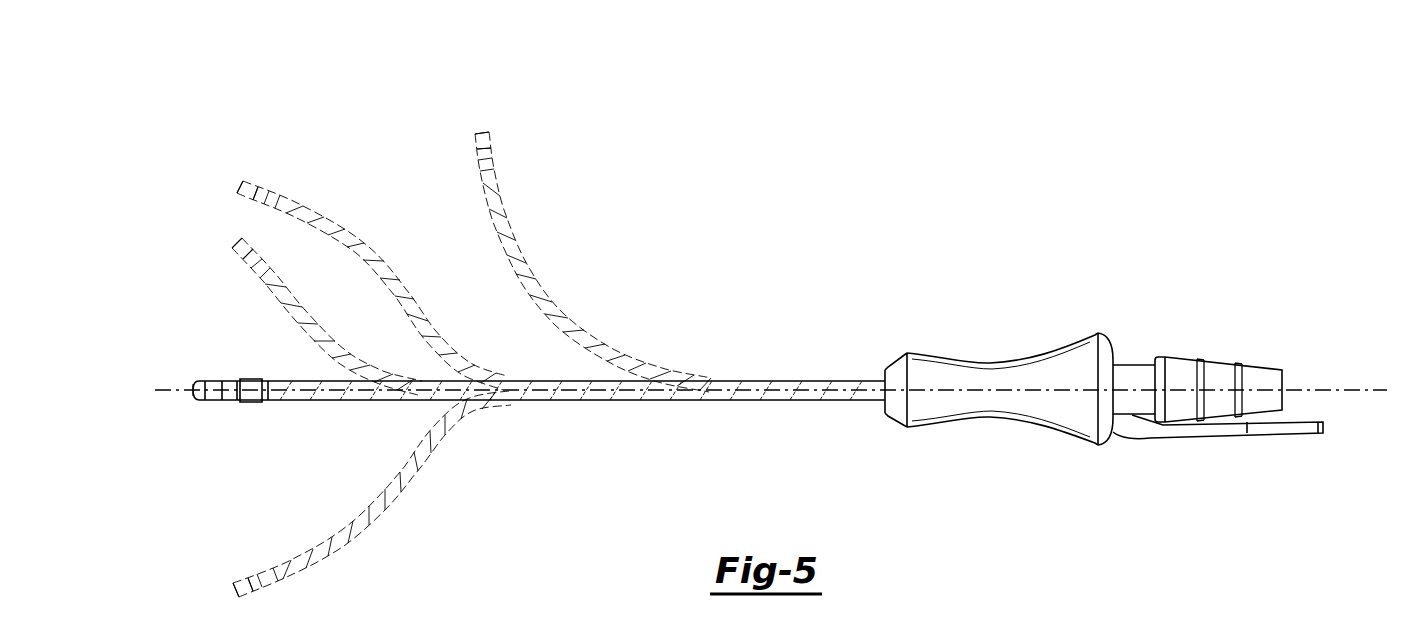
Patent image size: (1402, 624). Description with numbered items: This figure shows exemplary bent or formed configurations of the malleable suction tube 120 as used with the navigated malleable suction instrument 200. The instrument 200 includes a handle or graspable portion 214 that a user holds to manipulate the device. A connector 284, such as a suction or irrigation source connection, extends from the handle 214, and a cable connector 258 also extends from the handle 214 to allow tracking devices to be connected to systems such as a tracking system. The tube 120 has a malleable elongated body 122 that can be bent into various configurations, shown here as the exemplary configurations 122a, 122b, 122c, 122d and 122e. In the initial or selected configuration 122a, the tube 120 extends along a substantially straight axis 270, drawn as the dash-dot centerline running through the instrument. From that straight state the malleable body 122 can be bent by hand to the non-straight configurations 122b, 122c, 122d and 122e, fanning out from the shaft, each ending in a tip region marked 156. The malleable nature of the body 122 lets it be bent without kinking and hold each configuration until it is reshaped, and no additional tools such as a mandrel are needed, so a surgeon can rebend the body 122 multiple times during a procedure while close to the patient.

The tube 120 is at (708, 363).
The malleable elongated body 122 is at (840, 383).
The initial or selected configuration 122a is at (293, 402).
The non-straight configuration 122b is at (397, 517).
The non-straight configuration 122c is at (297, 331).
The non-straight configuration 122d is at (392, 285).
The upper tendril tube 122e is at (537, 288).
The electrode 156 is at (235, 183).
The navigated malleable suction instrument 200 is at (1104, 334).
The handle or graspable portion 214 is at (1027, 333).
The cable connector 258 is at (1277, 437).
The substantially straight axis 270 is at (1358, 390).
The connector 284 is at (1283, 380).